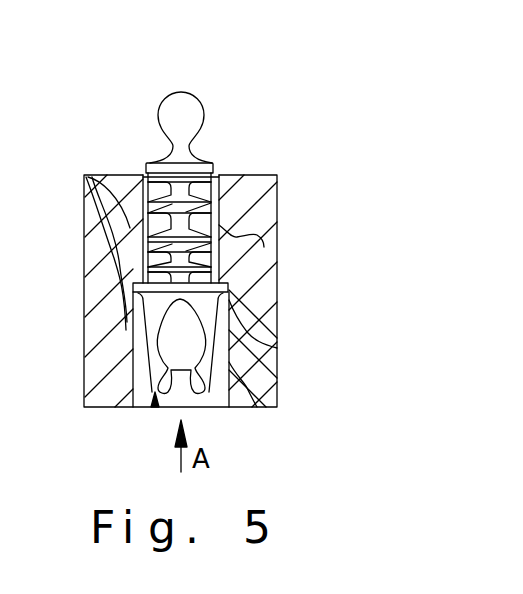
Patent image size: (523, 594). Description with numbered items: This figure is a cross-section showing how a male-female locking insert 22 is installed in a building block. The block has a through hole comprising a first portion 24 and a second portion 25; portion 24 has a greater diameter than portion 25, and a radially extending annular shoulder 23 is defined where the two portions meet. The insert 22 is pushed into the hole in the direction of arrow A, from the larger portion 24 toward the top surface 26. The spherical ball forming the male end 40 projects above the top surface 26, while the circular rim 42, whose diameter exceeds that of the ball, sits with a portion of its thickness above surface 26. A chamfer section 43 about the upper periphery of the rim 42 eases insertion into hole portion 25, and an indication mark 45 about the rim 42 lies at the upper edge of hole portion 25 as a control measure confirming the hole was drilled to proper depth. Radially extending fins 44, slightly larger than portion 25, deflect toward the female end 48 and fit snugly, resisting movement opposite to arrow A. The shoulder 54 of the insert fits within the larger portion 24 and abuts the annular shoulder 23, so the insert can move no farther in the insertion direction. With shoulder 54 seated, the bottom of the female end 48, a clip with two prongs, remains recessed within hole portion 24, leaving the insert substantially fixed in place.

The male-female locking insert 22 is at (186, 146).
The male end 40 is at (171, 95).
The chamfer section 43 is at (147, 173).
The circular rim 42 is at (208, 165).
The indication mark 45 is at (219, 177).
The radially extending fins 44 is at (219, 177).
The top surface 26 is at (263, 175).
The second portion of through hole 25 is at (144, 176).
The annular shoulder 23 is at (229, 283).
The shoulder of locking insert 54 is at (229, 289).
The female end 48 is at (153, 407).
The first portion of through hole 24 is at (212, 407).